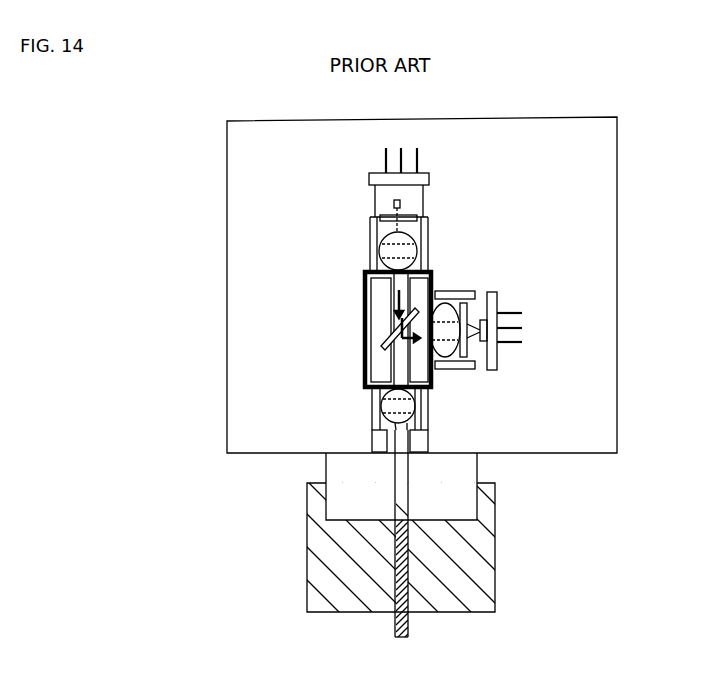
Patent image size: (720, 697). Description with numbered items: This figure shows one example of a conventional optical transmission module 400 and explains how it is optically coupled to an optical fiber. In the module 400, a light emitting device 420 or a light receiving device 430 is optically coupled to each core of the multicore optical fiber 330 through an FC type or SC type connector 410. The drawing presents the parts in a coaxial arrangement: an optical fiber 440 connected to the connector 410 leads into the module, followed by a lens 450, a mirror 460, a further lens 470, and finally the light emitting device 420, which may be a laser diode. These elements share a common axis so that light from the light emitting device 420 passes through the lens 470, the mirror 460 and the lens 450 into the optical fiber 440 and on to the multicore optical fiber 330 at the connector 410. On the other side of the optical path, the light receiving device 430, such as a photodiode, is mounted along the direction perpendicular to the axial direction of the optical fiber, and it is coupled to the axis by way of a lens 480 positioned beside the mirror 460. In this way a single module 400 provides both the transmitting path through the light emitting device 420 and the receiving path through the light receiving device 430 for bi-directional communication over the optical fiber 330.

The optical transmission module 400 is at (602, 117).
The light emitting device 420 is at (393, 201).
The lens 470 is at (392, 252).
The mirror 460 is at (380, 341).
The lens 450 is at (390, 408).
The lens 480 is at (445, 323).
The light receiving device 430 is at (494, 308).
The optical fiber 440 is at (393, 483).
The connector 410 is at (488, 551).
The optical fiber 330 is at (409, 630).